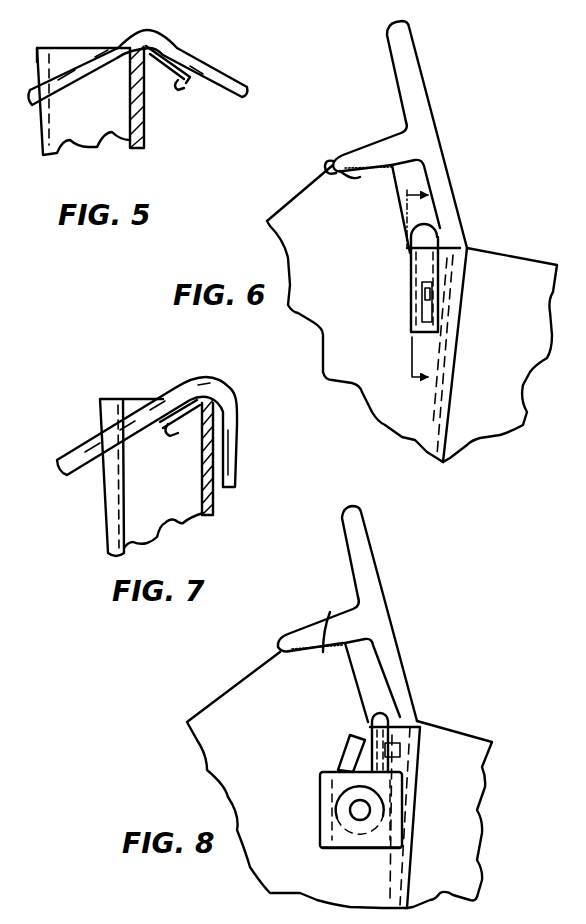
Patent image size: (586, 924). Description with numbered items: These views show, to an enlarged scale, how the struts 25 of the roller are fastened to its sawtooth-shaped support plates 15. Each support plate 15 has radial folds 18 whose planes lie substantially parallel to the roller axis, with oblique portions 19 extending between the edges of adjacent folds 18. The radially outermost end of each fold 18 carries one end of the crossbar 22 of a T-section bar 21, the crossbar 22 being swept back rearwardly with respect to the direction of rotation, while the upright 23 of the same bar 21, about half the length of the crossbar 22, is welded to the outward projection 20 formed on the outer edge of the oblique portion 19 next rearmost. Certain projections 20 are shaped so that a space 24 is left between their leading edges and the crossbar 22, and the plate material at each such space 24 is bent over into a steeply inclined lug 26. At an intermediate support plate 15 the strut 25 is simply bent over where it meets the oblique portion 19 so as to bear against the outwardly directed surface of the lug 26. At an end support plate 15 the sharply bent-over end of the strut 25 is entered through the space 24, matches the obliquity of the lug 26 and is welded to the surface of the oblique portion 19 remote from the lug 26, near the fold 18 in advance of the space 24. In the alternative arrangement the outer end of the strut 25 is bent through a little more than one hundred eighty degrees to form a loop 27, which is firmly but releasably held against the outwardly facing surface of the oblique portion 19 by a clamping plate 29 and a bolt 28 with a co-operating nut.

In FIG. 5, the support plate 15 is at (140, 147).
In FIG. 6, the support plate 15 is at (499, 248).
In FIG. 7, the support plate 15 is at (103, 510).
In FIG. 8, the support plate 15 is at (449, 814).
In FIG. 5, the radial fold 18 is at (70, 50).
In FIG. 6, the radial fold 18 is at (458, 370).
In FIG. 7, the radial fold 18 is at (128, 400).
In FIG. 8, the radial fold 18 is at (412, 810).
In FIG. 5, the oblique portion 19 is at (130, 105).
In FIG. 6, the oblique portion 19 is at (310, 248).
In FIG. 7, the oblique portion 19 is at (213, 508).
In FIG. 8, the oblique portion 19 is at (253, 698).
In FIG. 6, the outward projection 20 is at (335, 163).
In FIG. 8, the outward projection 20 is at (329, 615).
In FIG. 6, the T-section bar 21 is at (387, 54).
In FIG. 8, the T-section bar 21 is at (341, 545).
In FIG. 6, the crossbar 22 is at (425, 84).
In FIG. 8, the crossbar 22 is at (382, 578).
In FIG. 6, the upright 23 is at (350, 154).
In FIG. 8, the upright 23 is at (300, 628).
In FIG. 6, the space 24 is at (403, 193).
In FIG. 8, the space 24 is at (370, 673).
In FIG. 5, the strut 25 is at (227, 65).
In FIG. 6, the strut 25 is at (410, 261).
In FIG. 7, the strut 25 is at (217, 383).
In FIG. 8, the strut 25 is at (389, 719).
In FIG. 5, the lug 26 is at (186, 86).
In FIG. 6, the lug 26 is at (407, 273).
In FIG. 7, the lug 26 is at (173, 437).
In FIG. 8, the lug 26 is at (400, 750).
In FIG. 8, the loop 27 is at (336, 800).
In FIG. 8, the bolt 28 is at (356, 810).
In FIG. 8, the clamping plate 29 is at (363, 850).